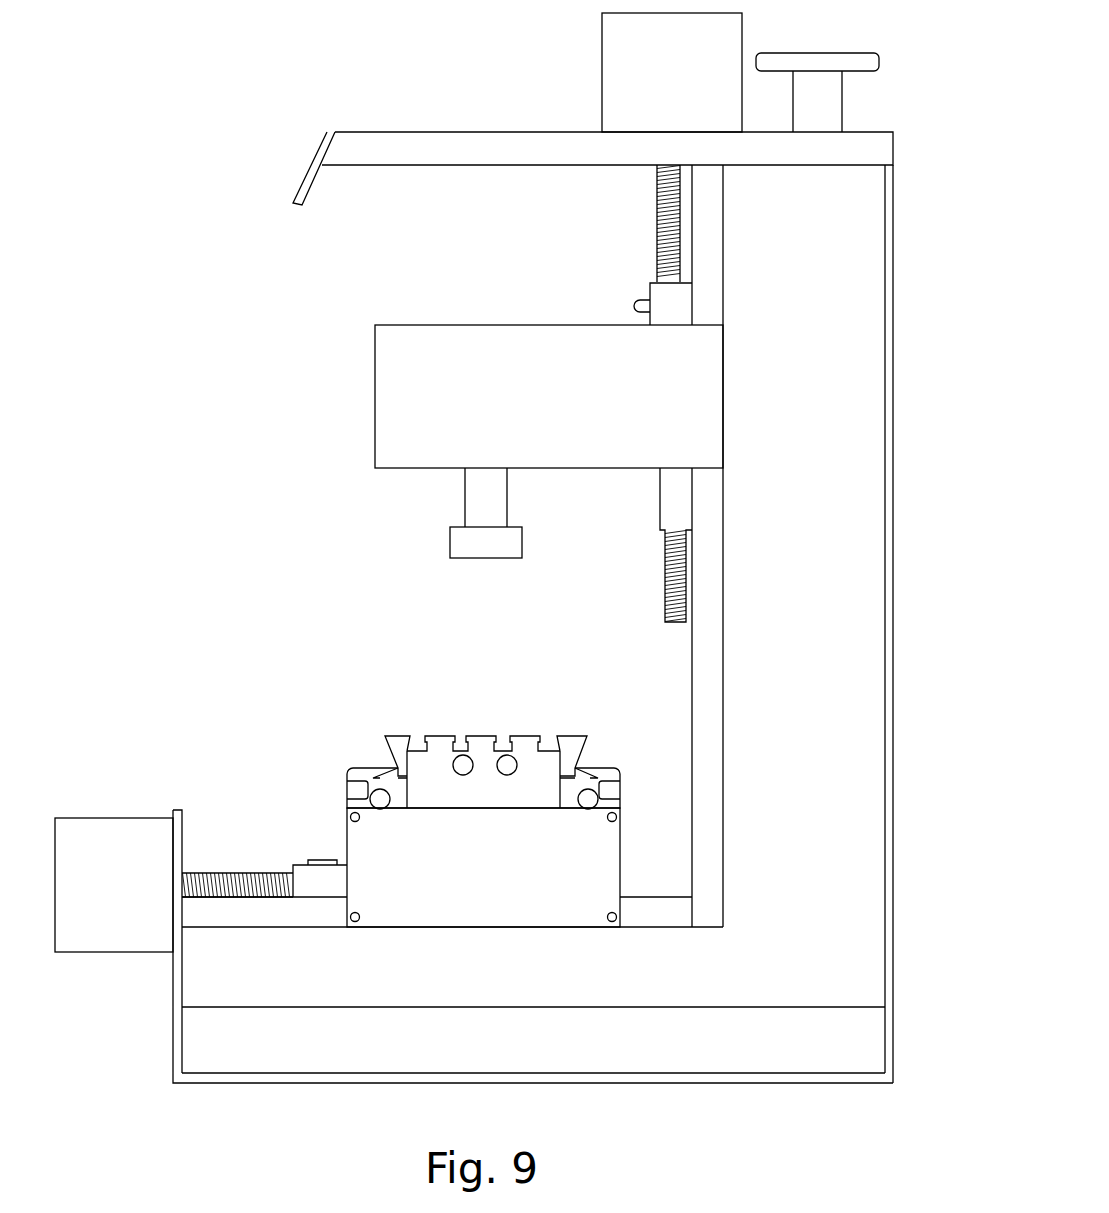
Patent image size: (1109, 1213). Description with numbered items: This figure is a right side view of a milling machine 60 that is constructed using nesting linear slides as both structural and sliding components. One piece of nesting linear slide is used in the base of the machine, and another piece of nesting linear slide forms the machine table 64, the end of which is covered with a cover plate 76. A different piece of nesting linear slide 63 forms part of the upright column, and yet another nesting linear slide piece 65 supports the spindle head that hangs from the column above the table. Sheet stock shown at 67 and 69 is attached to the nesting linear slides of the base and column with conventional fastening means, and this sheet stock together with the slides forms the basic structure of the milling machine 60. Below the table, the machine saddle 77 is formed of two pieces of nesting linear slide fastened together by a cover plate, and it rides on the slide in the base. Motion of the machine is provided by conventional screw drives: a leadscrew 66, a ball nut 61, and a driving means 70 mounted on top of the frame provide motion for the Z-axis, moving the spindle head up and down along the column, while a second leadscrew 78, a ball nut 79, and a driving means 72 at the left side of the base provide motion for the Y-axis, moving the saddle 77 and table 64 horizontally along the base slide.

The milling machine 60 is at (292, 367).
The ball nut 61 is at (660, 298).
The nesting linear slide 63 is at (705, 760).
The machine table 64 is at (438, 733).
The nesting linear slide piece 65 is at (673, 490).
The leadscrew 66 is at (657, 238).
The sheet stock 67 is at (795, 733).
The sheet stock 69 is at (257, 1038).
The driving means 70 is at (632, 62).
The driving means 72 is at (145, 843).
The cover plate 76 is at (420, 798).
The machine saddle 77 is at (388, 857).
The leadscrew 78 is at (270, 870).
The ball nut 79 is at (330, 878).